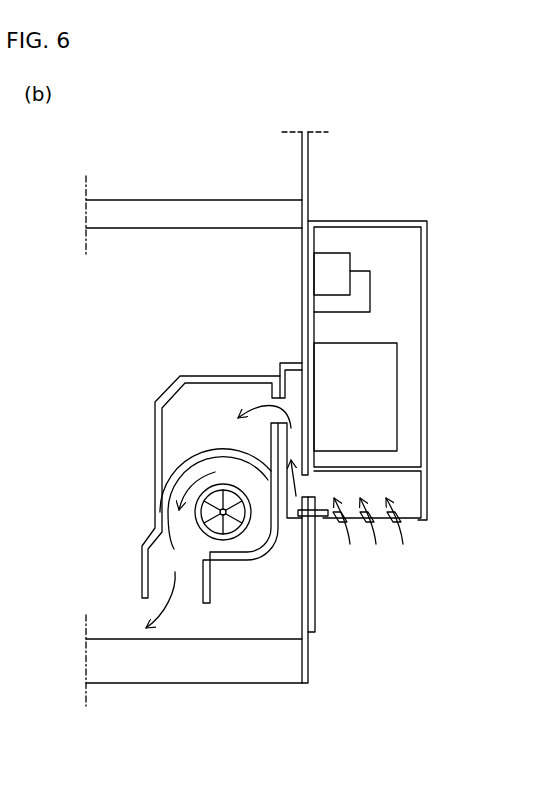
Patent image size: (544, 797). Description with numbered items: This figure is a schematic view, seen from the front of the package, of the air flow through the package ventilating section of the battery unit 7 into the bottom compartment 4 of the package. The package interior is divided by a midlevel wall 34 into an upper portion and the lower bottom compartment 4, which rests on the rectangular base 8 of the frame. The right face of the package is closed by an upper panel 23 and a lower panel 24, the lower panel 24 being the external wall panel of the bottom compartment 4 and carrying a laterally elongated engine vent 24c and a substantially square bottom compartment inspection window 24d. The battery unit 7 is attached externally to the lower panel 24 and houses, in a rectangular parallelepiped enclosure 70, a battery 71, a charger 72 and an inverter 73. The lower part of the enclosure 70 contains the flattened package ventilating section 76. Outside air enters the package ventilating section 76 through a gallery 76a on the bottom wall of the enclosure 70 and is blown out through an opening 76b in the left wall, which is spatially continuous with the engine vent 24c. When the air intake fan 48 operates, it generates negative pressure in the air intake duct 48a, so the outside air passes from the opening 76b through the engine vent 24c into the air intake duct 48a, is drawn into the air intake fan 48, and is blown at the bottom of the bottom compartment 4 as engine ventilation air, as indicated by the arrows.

The bottom compartment 4 is at (134, 299).
The battery unit 7 is at (409, 364).
The rectangular base 8 is at (190, 671).
The upper panel 23 is at (305, 159).
The lower panel 24 is at (309, 668).
The engine vent 24c is at (296, 518).
The bottom compartment inspection window 24d is at (316, 606).
The midlevel wall 34 is at (188, 200).
The air intake fan 48 is at (177, 467).
The air intake duct 48a is at (291, 362).
The enclosure 70 is at (431, 339).
The battery 71 is at (380, 399).
The charger 72 is at (360, 284).
The inverter 73 is at (338, 262).
The package ventilating section 76 is at (405, 494).
The gallery 76a is at (336, 532).
The opening 76b is at (302, 486).